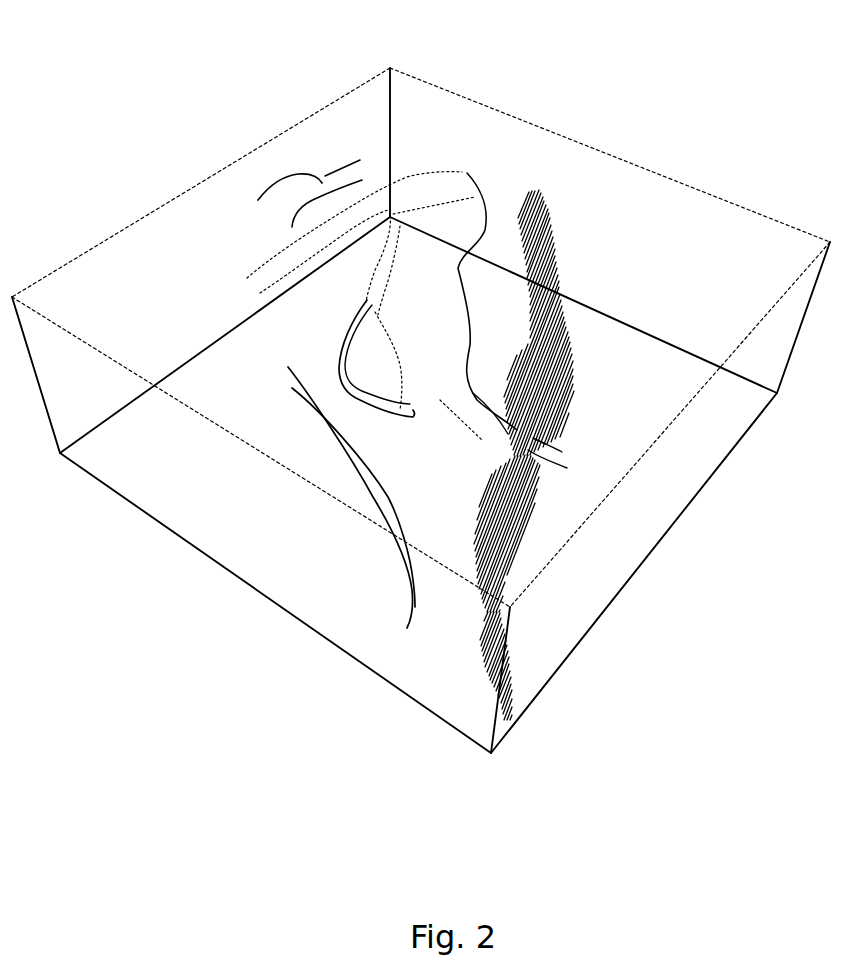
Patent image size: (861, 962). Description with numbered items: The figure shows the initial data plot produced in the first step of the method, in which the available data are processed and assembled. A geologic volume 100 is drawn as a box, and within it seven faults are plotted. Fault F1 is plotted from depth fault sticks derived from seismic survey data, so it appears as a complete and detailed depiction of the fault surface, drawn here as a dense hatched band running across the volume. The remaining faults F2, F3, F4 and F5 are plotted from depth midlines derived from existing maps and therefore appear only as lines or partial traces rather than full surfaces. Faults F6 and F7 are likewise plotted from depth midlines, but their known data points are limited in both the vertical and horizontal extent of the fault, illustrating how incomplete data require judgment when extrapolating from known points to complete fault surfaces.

The geologic volume 100 is at (675, 213).
The fault F1 is at (552, 241).
The fault F2 is at (485, 190).
The fault F3 is at (440, 197).
The fault F4 is at (395, 418).
The fault F5 is at (288, 388).
The fault F6 is at (250, 266).
The fault F7 is at (284, 193).